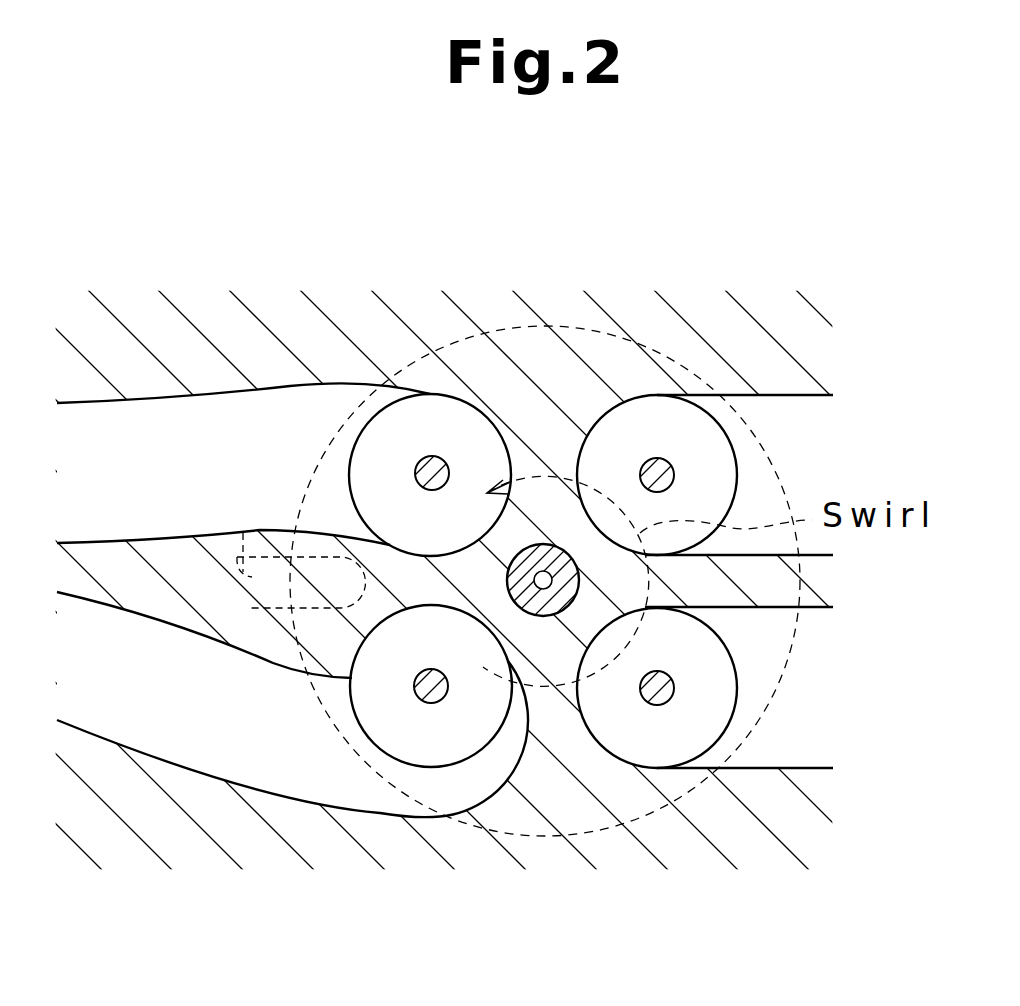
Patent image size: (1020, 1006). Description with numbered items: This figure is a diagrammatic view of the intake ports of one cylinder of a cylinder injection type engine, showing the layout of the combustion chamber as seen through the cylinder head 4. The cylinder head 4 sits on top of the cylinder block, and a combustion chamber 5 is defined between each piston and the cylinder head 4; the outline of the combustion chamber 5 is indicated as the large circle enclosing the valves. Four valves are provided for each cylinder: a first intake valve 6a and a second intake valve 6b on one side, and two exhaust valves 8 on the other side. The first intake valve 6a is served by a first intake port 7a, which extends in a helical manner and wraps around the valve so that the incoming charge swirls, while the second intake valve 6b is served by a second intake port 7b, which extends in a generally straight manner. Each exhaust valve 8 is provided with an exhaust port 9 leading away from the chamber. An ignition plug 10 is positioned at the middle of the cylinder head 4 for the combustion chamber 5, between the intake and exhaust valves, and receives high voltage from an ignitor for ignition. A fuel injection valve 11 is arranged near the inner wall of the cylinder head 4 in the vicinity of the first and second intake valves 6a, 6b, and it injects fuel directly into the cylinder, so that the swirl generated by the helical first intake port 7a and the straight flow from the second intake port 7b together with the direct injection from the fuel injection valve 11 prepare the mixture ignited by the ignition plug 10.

The cylinder head 4 is at (778, 322).
The combustion chamber 5 is at (540, 335).
The first intake valve 6a is at (445, 743).
The second intake valve 6b is at (455, 413).
The first intake port 7a is at (248, 762).
The second intake port 7b is at (218, 410).
The exhaust valve 8 is at (647, 413).
The exhaust port 9 is at (787, 407).
The ignition plug 10 is at (563, 548).
The fuel injection valve 11 is at (243, 532).